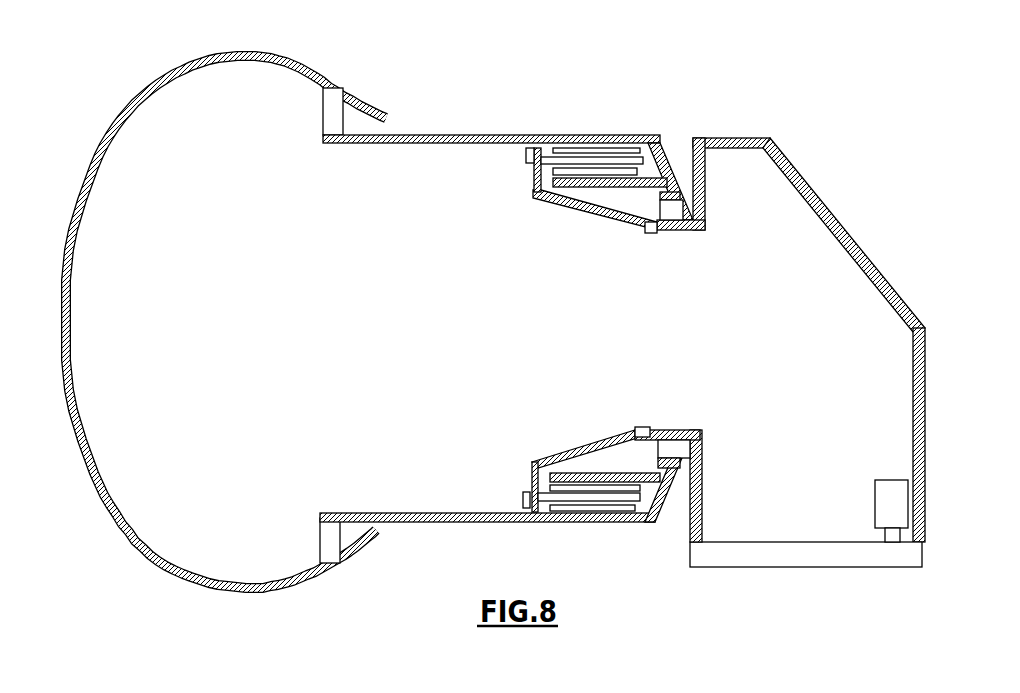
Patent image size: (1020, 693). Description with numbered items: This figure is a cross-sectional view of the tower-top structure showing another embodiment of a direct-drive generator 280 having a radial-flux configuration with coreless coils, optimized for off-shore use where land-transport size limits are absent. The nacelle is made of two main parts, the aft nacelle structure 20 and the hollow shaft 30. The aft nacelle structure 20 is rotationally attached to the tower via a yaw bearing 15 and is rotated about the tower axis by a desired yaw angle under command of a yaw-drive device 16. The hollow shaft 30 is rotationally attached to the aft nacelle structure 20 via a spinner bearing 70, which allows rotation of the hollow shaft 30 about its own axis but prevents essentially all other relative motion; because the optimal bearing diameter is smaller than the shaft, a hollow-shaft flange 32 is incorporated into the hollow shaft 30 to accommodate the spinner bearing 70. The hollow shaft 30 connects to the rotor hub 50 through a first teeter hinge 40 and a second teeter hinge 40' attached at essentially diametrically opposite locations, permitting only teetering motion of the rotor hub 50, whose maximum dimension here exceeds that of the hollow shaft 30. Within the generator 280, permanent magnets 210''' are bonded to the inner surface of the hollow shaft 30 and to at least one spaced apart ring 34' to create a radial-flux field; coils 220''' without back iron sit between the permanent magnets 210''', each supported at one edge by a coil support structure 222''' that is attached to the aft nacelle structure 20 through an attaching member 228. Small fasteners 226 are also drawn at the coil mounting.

The rotor hub 50 is at (107, 147).
The first teeter hinge 40 is at (302, 108).
The second teeter hinge 40' is at (297, 530).
The hollow shaft 30 is at (455, 524).
The aft nacelle structure 20 is at (841, 246).
The yaw bearing 15 is at (784, 542).
The yaw-drive device 16 is at (882, 480).
The hollow-shaft flange 32 is at (700, 521).
The spinner bearing 70 is at (673, 214).
The coil support structure 222''' is at (606, 356).
The coil 220''' is at (496, 330).
The fastener 226 is at (526, 156).
The permanent magnet 210''' is at (588, 360).
The spaced apart ring 34' is at (608, 330).
The attaching member 228 is at (650, 234).
The generator 280 is at (586, 272).